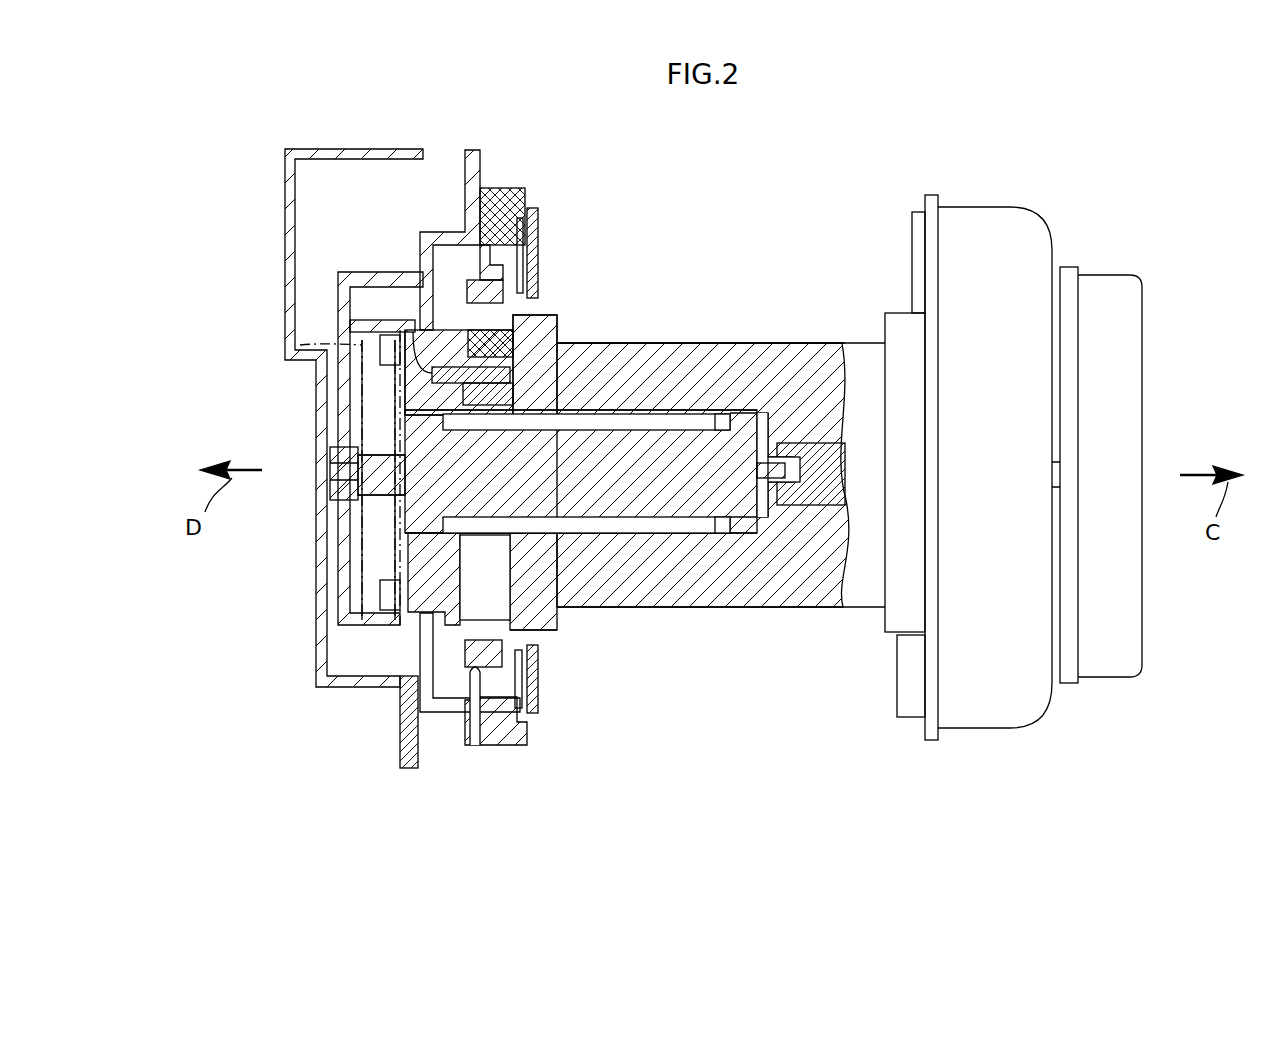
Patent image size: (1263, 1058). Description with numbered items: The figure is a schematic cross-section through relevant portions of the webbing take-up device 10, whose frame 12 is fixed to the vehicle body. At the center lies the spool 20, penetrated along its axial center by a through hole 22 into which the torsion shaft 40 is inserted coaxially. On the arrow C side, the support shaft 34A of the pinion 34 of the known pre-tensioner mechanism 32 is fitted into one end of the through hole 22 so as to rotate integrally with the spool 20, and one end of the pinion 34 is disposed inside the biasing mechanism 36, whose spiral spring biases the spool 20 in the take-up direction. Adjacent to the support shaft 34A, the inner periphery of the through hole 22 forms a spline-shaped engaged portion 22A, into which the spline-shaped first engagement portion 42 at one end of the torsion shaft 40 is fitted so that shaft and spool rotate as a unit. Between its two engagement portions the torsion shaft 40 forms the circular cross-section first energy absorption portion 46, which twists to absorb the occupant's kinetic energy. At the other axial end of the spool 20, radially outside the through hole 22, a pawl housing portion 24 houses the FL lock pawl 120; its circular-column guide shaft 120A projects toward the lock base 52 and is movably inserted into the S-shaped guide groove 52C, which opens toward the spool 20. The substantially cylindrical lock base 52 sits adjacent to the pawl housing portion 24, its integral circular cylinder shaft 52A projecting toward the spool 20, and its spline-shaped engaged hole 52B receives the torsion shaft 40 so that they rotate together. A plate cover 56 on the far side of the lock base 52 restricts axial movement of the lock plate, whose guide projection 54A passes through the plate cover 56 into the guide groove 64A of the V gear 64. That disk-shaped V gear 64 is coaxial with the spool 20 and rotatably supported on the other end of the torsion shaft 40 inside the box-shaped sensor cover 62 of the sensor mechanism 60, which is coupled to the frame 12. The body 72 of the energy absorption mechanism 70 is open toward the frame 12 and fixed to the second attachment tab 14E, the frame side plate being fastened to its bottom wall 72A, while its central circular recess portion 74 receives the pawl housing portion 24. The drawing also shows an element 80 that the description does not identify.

The webbing take-up device 10 is at (743, 172).
The frame 12 is at (546, 211).
The second attachment tab 14E is at (540, 236).
The spool 20 is at (752, 340).
The through hole 22 is at (643, 527).
The engaged portion 22A is at (712, 520).
The pawl housing portion 24 is at (555, 632).
The pre-tensioner mechanism 32 is at (977, 205).
The pinion 34 is at (911, 467).
The support shaft 34A is at (812, 505).
The biasing mechanism 36 is at (1107, 273).
The torsion shaft 40 is at (720, 343).
The first engagement portion 42 is at (785, 343).
The first energy absorption portion 46 is at (672, 343).
The lock base 52 is at (474, 485).
The circular cylinder shaft 52A is at (485, 577).
The engaged hole 52B is at (560, 607).
The guide groove 52C is at (415, 336).
The guide projection 54A is at (340, 400).
The plate cover 56 is at (395, 530).
The sensor mechanism 60 is at (336, 293).
The sensor cover 62 is at (336, 317).
The V gear 64 is at (362, 535).
The guide groove 64A is at (300, 345).
The energy absorption mechanism 70 is at (496, 188).
The body 72 is at (492, 746).
The bottom wall 72A is at (474, 730).
The recess portion 74 is at (477, 668).
The seal plate 80 is at (506, 272).
The FL lock pawl 120 is at (492, 322).
The guide shaft 120A is at (442, 382).